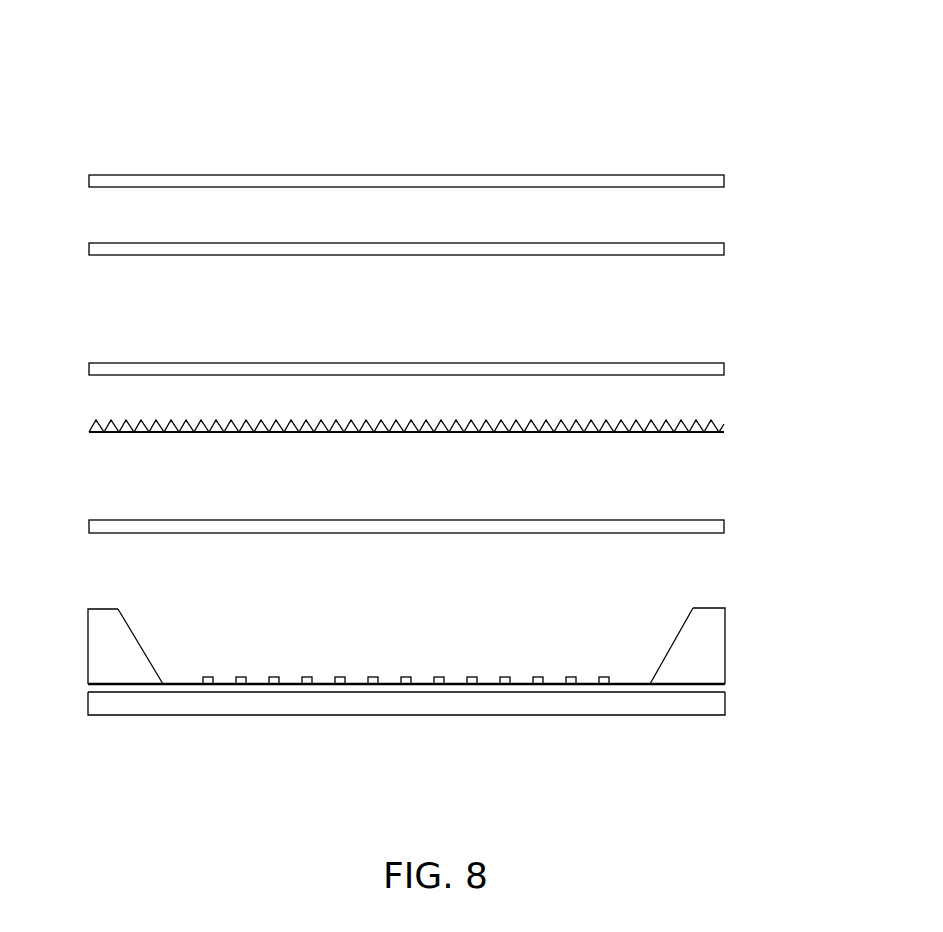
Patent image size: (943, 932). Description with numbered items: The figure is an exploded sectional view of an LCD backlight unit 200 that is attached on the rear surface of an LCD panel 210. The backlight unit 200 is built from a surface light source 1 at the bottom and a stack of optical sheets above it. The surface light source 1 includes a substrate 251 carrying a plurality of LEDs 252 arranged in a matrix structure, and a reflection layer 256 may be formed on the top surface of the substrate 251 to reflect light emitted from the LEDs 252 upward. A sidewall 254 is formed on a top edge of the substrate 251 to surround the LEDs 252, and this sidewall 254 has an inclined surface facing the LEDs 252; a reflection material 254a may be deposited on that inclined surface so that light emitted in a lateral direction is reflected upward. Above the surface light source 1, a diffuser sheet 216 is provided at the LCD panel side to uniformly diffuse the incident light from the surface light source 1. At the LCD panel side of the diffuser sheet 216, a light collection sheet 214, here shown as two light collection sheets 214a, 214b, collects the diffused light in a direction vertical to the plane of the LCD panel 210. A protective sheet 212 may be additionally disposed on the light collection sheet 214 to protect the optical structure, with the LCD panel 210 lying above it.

The LCD backlight unit 200 is at (568, 146).
The LCD panel 210 is at (724, 181).
The protective sheet 212 is at (724, 249).
The light collection sheet 214 is at (484, 407).
The light collection sheet 214b is at (724, 369).
The light collection sheet 214a is at (724, 432).
The diffuser sheet 216 is at (724, 527).
The surface light source 1 is at (78, 704).
The sidewall 254 is at (402, 620).
The reflection material 254a is at (140, 639).
The LEDs 252 is at (373, 677).
The reflection layer 256 is at (725, 690).
The substrate 251 is at (725, 705).